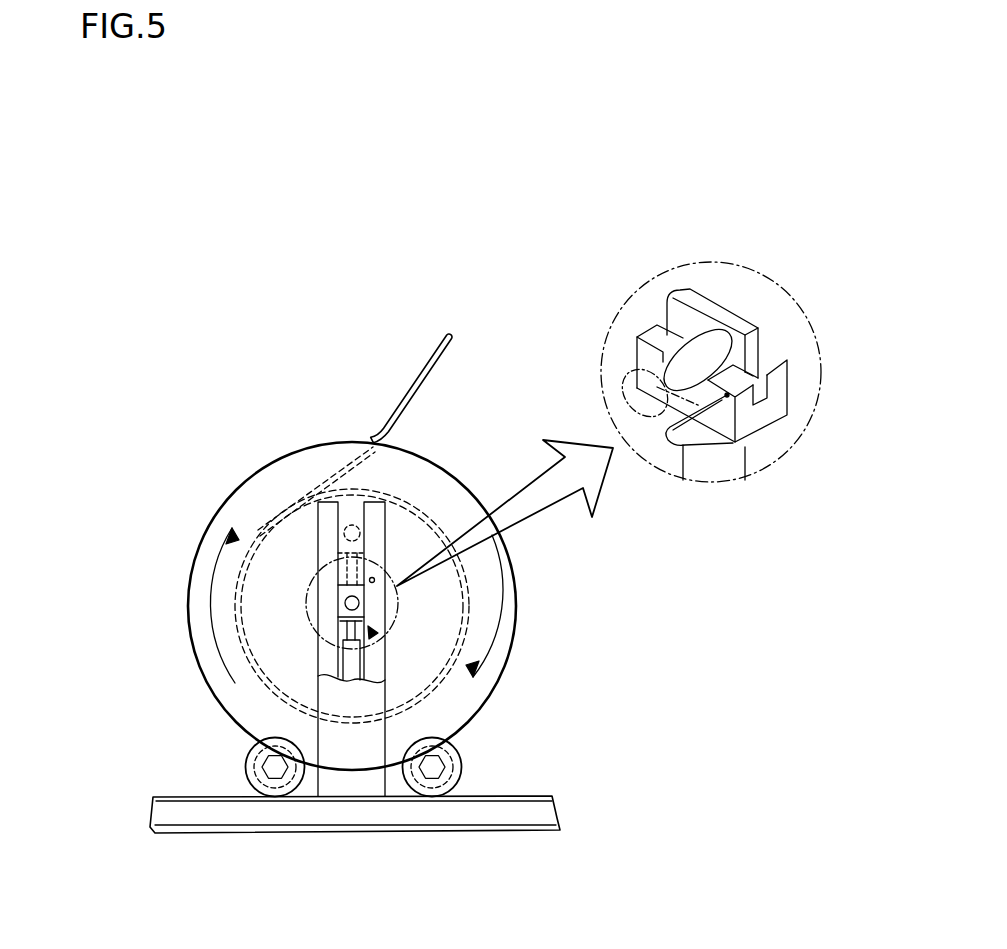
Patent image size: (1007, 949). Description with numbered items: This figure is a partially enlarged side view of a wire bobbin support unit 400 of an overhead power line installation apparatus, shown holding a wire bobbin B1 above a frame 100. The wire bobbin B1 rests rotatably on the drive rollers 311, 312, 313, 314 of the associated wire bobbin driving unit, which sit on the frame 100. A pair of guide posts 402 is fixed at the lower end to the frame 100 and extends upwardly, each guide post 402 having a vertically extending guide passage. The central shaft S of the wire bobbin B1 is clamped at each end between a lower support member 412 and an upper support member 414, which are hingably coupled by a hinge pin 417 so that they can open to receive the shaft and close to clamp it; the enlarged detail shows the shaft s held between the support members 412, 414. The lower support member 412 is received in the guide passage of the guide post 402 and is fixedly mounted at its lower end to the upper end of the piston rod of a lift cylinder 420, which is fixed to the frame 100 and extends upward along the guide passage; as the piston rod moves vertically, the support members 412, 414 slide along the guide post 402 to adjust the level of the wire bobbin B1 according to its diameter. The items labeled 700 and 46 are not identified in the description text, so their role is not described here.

The wire bobbin support unit 400 is at (176, 513).
The wire bobbin B1 is at (264, 472).
The handle 700 is at (427, 368).
The guide post 402 is at (376, 503).
The central shaft S is at (345, 602).
The lift cylinder 420 is at (352, 660).
The drive roller 311 is at (178, 767).
The drive roller 312 is at (320, 764).
The drive roller 313 is at (546, 757).
The drive roller 314 is at (388, 763).
The frame 100 is at (498, 822).
The upper support member 414 is at (732, 318).
The hinge pin 417 is at (648, 349).
The central shaft s is at (622, 385).
The lower support member 412 is at (758, 423).
The pin 46 is at (670, 440).